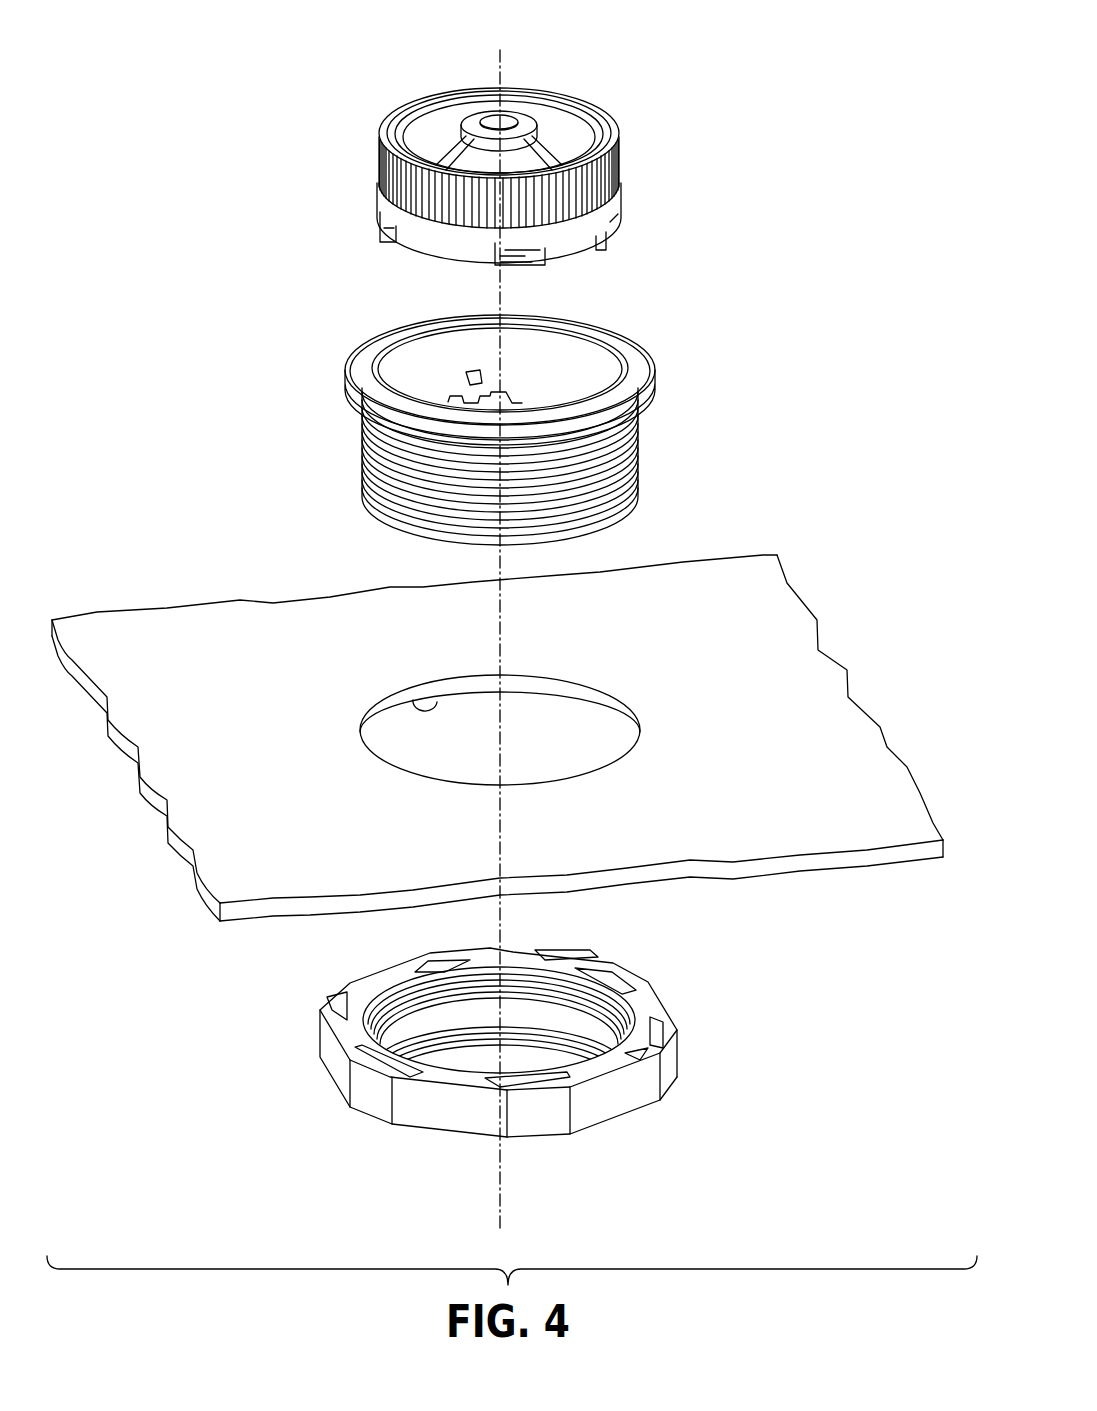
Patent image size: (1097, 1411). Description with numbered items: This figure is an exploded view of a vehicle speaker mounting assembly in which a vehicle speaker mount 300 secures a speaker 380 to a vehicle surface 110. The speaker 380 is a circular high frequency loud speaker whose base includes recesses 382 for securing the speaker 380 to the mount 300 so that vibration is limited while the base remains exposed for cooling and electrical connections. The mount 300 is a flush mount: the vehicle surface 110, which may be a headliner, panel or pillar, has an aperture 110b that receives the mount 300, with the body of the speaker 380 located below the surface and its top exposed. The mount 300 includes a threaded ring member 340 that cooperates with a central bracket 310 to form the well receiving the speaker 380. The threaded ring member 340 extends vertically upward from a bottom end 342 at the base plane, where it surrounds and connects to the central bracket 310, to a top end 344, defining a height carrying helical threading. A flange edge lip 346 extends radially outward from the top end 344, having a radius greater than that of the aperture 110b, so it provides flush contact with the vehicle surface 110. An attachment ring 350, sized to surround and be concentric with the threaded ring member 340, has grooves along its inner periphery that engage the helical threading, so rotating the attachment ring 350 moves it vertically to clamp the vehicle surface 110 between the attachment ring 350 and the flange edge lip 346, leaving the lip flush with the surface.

The vehicle speaker mount 300 is at (803, 74).
The speaker 380 is at (598, 95).
The recesses 382 is at (384, 222).
The central bracket 310 is at (348, 410).
The top end 344 is at (632, 336).
The flange edge lip 346 is at (378, 360).
The threaded ring member 340 is at (640, 447).
The bottom end 342 is at (640, 497).
The vehicle surface 110 is at (753, 714).
The aperture 110b is at (422, 708).
The attachment ring 350 is at (655, 1003).